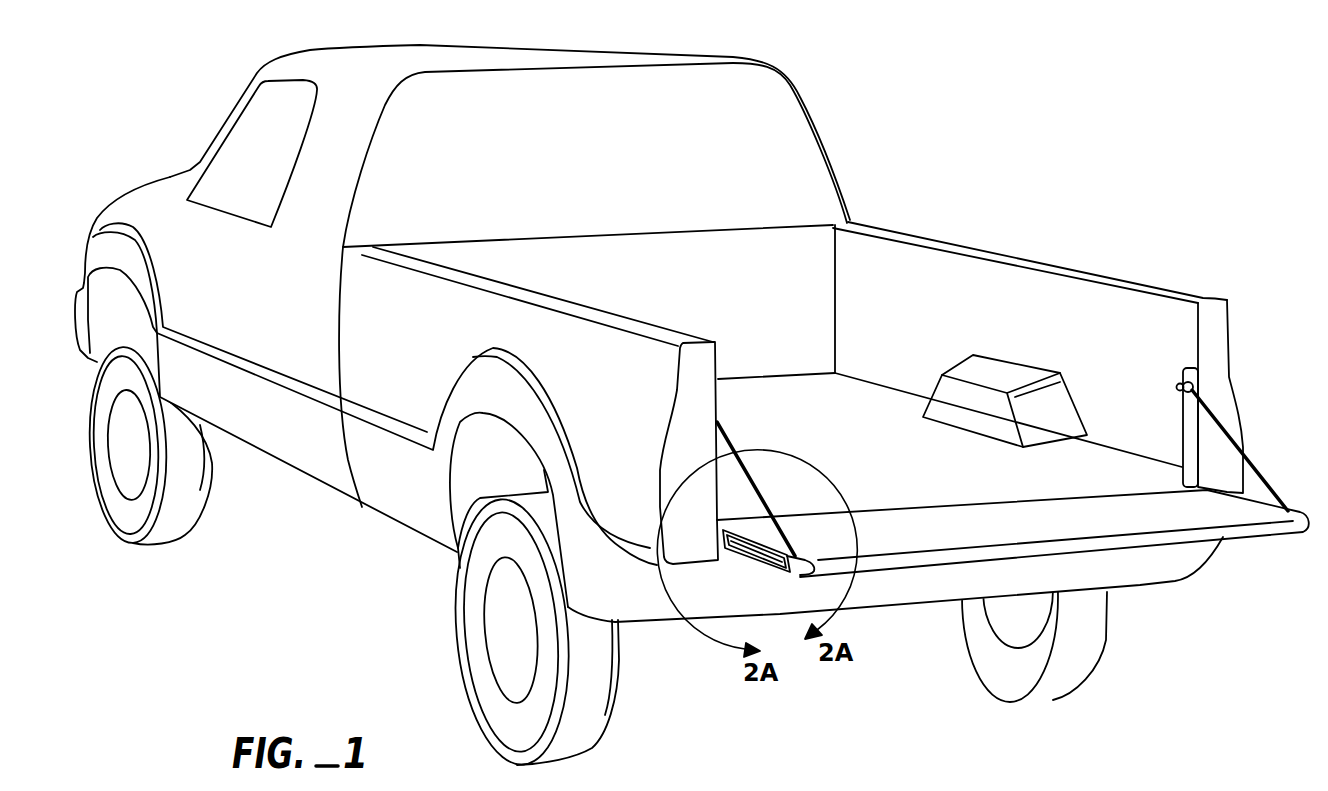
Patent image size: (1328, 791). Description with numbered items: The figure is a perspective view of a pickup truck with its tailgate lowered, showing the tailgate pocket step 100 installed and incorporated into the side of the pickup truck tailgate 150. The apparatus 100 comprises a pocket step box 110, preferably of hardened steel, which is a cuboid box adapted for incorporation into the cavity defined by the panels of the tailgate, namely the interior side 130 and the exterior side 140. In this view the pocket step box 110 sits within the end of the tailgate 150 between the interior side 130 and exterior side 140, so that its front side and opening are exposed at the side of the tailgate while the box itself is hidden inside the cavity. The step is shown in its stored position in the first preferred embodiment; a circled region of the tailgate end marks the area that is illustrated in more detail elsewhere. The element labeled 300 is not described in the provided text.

The tailgate pocket step 100 is at (750, 569).
The pocket step box 110 is at (760, 563).
The interior side 130 is at (1032, 525).
The exterior side 140 is at (897, 585).
The pickup truck tailgate 150 is at (1221, 541).
The housing 300 is at (740, 551).